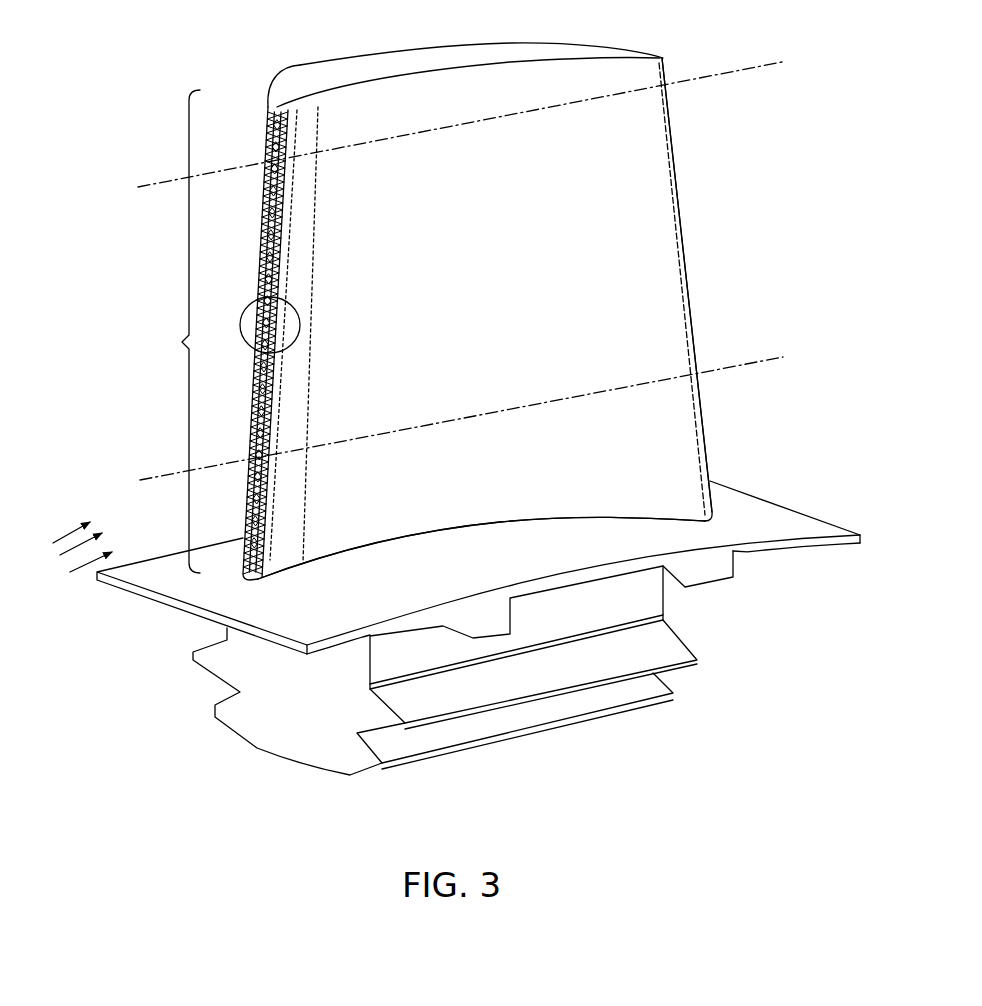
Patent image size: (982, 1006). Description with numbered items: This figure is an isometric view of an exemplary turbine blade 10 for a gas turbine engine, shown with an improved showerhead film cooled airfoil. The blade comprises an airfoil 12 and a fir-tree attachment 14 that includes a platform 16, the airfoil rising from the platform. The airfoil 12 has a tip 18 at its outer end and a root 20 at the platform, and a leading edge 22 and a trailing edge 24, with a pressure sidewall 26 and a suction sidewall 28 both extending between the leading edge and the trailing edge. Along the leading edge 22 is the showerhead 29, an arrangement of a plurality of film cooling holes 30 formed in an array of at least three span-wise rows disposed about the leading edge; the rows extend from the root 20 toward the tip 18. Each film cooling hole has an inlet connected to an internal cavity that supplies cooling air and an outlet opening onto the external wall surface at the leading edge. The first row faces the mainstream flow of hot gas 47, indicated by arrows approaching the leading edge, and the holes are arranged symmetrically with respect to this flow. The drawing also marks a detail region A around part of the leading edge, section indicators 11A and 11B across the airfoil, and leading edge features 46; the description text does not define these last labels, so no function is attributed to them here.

The turbine blade 10 is at (693, 133).
The airfoil 12 is at (683, 218).
The fir-tree attachment 14 is at (687, 638).
The platform 16 is at (813, 520).
The tip 18 is at (313, 80).
The root 20 is at (450, 530).
The leading edge 22 is at (240, 523).
The trailing edge 24 is at (705, 437).
The pressure sidewall 26 is at (603, 169).
The suction sidewall 28 is at (588, 78).
The showerhead 29 is at (172, 331).
The film cooling holes 30 is at (270, 135).
The leading edge cooling features 46 is at (270, 190).
The mainstream flow of hot gas 47 is at (73, 525).
The detail region A is at (300, 322).
The section line 11A is at (138, 187).
The section line 11B is at (140, 480).